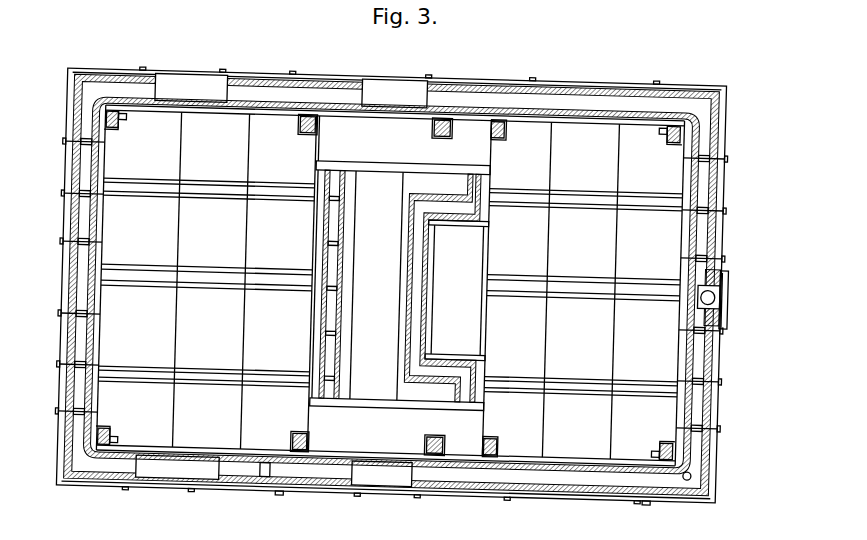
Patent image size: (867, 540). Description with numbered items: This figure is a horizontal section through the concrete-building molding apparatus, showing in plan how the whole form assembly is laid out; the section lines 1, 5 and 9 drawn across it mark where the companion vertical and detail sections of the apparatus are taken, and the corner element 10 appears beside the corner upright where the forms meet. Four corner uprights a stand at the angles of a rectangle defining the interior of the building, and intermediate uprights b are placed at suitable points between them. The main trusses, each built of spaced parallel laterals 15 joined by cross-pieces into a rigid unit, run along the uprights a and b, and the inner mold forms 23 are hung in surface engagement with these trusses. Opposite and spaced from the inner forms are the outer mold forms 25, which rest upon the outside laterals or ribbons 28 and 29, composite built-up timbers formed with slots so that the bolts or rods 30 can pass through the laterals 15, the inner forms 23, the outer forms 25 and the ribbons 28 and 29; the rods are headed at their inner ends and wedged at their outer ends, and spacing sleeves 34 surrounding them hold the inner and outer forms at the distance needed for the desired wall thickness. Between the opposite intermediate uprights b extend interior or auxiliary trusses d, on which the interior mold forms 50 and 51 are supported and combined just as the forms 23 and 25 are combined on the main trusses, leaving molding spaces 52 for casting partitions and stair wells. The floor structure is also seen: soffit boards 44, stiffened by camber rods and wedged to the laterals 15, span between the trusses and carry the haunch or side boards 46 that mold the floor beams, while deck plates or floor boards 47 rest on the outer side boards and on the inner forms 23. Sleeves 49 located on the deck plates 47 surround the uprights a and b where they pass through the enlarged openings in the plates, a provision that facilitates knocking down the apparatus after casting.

The section line 1— 1 is at (35, 319).
The section line 5— 5 is at (50, 269).
The section line 9— 9 is at (191, 155).
The corner block 10 is at (662, 131).
The laterals 15 is at (588, 118).
The inner mold forms 23 is at (340, 111).
The outer mold forms 25 is at (335, 83).
The outside lateral or ribbon 28 is at (597, 82).
The outside lateral or ribbon 29 is at (67, 172).
The bolts or rods 30 is at (287, 497).
The spacing sleeves 34 is at (268, 480).
The soffit boards 44 is at (588, 203).
The haunch or side boards 46 is at (196, 204).
The deck plates or floor boards 47 is at (395, 285).
The sleeves 49 is at (122, 125).
The interior mold form 50 is at (322, 241).
The interior mold form 51 is at (346, 222).
The molding spaces 52 is at (345, 192).
The uprights a is at (113, 136).
The intermediate uprights b is at (296, 131).
The interior or auxiliary trusses d is at (440, 248).